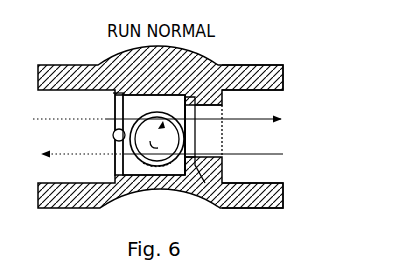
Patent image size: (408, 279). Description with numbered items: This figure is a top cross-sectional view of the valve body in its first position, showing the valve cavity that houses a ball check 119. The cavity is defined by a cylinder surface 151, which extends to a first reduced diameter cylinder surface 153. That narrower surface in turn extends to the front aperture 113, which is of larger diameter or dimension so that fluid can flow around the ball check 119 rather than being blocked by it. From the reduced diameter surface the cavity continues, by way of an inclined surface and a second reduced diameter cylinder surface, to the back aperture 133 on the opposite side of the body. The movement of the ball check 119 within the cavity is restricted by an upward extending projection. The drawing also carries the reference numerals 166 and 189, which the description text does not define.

The front aperture 113 is at (108, 112).
The ball check 119 is at (150, 90).
The back aperture 133 is at (228, 131).
The cylinder surface 151 is at (200, 96).
The first reduced diameter cylinder surface 153 is at (112, 90).
The seat ring 166 is at (226, 103).
The pipe conduit 189 is at (285, 88).